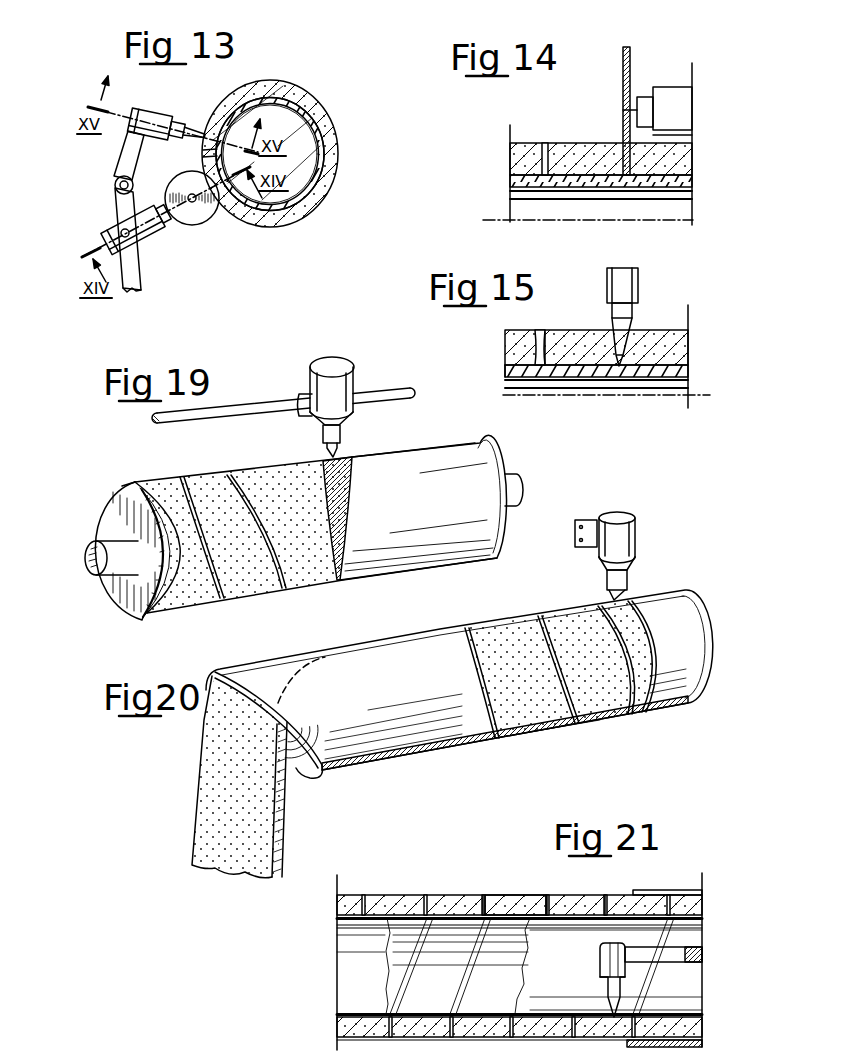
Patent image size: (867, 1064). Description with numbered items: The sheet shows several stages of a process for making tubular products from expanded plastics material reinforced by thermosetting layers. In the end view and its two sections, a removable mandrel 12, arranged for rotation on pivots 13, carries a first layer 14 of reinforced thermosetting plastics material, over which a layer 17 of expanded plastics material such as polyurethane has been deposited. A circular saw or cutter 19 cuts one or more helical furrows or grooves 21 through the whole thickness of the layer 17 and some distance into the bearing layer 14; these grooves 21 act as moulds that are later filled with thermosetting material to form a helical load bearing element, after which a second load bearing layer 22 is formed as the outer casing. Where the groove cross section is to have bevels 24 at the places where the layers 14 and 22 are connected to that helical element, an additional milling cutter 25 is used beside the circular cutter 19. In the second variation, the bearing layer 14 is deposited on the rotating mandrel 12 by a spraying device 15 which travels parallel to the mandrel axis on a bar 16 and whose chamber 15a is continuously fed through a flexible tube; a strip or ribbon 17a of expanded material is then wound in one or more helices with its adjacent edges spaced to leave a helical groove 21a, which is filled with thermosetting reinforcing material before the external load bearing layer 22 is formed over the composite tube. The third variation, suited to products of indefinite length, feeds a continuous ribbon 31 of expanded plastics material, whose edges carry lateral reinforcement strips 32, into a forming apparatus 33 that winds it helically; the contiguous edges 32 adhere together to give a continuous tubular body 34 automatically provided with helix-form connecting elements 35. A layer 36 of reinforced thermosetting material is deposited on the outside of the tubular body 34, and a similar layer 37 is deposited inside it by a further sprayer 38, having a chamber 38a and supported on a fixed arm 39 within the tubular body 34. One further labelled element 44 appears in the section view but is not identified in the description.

In FIG. 13, the removable mandrel 12 is at (325, 129).
In FIG. 14, the removable mandrel 12 is at (512, 196).
In FIG. 15, the removable mandrel 12 is at (615, 390).
In FIG. 19, the pivots 13 is at (109, 537).
In FIG. 13, the first layer 14 is at (314, 112).
In FIG. 14, the first layer 14 is at (590, 180).
In FIG. 19, the first layer 14 is at (152, 610).
In FIG. 19, the spraying device 15 is at (342, 431).
In FIG. 20, the spraying device 15 is at (622, 578).
In FIG. 19, the chamber 15a is at (328, 380).
In FIG. 20, the chamber 15a is at (614, 518).
In FIG. 19, the bar 16 is at (258, 410).
In FIG. 13, the layer of expanded plastics material 17 is at (280, 86).
In FIG. 14, the layer of expanded plastics material 17 is at (583, 150).
In FIG. 15, the layer of expanded plastics material 17 is at (650, 340).
In FIG. 19, the strip or ribbon of expanded material 17a is at (278, 535).
In FIG. 13, the circular saw or cutter 19 is at (200, 224).
In FIG. 14, the circular saw or cutter 19 is at (632, 60).
In FIG. 13, the helical furrow or groove 21 is at (213, 108).
In FIG. 14, the helical furrow or groove 21 is at (545, 143).
In FIG. 15, the helical furrow or groove 21 is at (539, 350).
In FIG. 19, the helical groove 21a is at (185, 495).
In FIG. 19, the second load bearing layer 22 is at (405, 455).
In FIG. 15, the bevels 24 is at (546, 333).
In FIG. 13, the milling cutter 25 is at (201, 129).
In FIG. 15, the milling cutter 25 is at (613, 340).
In FIG. 20, the continuous ribbon of expanded plastics material 31 is at (223, 830).
In FIG. 21, the continuous ribbon of expanded plastics material 31 is at (512, 907).
In FIG. 20, the lateral reinforcement strips 32 is at (543, 613).
In FIG. 21, the lateral reinforcement strips 32 is at (483, 895).
In FIG. 20, the forming apparatus 33 is at (383, 757).
In FIG. 21, the forming apparatus 33 is at (643, 893).
In FIG. 20, the tubular body 34 is at (556, 731).
In FIG. 20, the helix connecting elements 35 is at (633, 686).
In FIG. 21, the helix connecting elements 35 is at (600, 900).
In FIG. 20, the external layer of reinforced thermosetting material 36 is at (662, 600).
In FIG. 21, the external layer of reinforced thermosetting material 36 is at (416, 895).
In FIG. 21, the internal layer 37 is at (347, 1013).
In FIG. 21, the further sprayer 38 is at (608, 993).
In FIG. 21, the chamber 38a is at (600, 957).
In FIG. 21, the fixed arm 39 is at (672, 957).
In FIG. 15, the adhesive layer 44 is at (507, 366).